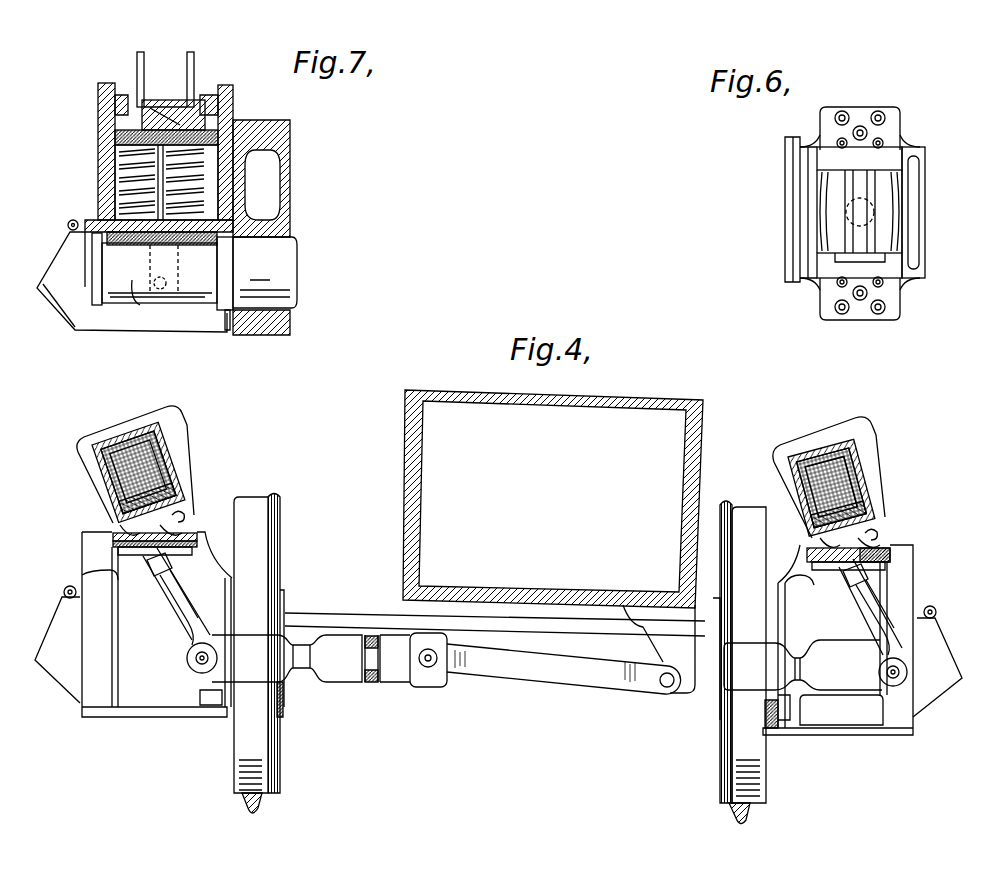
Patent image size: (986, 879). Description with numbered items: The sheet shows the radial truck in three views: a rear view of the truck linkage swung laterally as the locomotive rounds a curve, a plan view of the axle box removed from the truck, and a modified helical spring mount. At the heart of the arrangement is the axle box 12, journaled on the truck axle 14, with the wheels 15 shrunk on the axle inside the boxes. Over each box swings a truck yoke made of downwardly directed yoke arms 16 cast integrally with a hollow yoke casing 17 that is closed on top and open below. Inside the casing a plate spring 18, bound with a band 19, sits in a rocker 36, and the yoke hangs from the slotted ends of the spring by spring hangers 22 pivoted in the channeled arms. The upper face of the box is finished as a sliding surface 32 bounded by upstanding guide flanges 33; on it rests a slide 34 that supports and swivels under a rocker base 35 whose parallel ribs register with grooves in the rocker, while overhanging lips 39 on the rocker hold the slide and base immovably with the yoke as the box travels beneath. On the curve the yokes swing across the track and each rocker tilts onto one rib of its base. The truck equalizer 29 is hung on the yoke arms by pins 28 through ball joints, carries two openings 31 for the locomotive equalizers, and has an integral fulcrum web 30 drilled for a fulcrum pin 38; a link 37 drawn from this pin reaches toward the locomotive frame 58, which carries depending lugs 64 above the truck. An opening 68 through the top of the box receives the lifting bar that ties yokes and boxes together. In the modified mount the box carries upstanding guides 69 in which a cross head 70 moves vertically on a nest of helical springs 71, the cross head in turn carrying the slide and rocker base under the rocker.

In FIG. 7, the axle box 12 is at (172, 330).
In FIG. 6, the axle box 12 is at (888, 112).
In FIG. 4, the axle box 12 is at (918, 586).
In FIG. 7, the truck axle 14 is at (285, 272).
In FIG. 4, the truck axle 14 is at (372, 618).
In FIG. 7, the wheels 15 is at (275, 180).
In FIG. 4, the wheels 15 is at (282, 752).
In FIG. 7, the yoke arms 16 is at (194, 60).
In FIG. 4, the yoke arms 16 is at (195, 628).
In FIG. 4, the yoke casing 17 is at (125, 430).
In FIG. 4, the plate spring 18 is at (815, 455).
In FIG. 4, the band 19 is at (162, 492).
In FIG. 4, the spring hanger 22 is at (175, 580).
In FIG. 4, the pins 28 is at (198, 662).
In FIG. 4, the truck equalizer 29 is at (345, 678).
In FIG. 4, the fulcrum web 30 is at (420, 683).
In FIG. 4, the openings 31 is at (300, 645).
In FIG. 6, the sliding surface 32 is at (895, 155).
In FIG. 6, the guide flanges 33 is at (810, 185).
In FIG. 4, the guide flanges 33 is at (107, 533).
In FIG. 7, the slide 34 is at (218, 140).
In FIG. 6, the slide 34 is at (860, 264).
In FIG. 4, the slide 34 is at (122, 548).
In FIG. 7, the rocker base 35 is at (152, 104).
In FIG. 6, the rocker base 35 is at (845, 200).
In FIG. 4, the rocker base 35 is at (885, 548).
In FIG. 7, the rocker 36 is at (150, 100).
In FIG. 4, the rocker 36 is at (186, 499).
In FIG. 4, the link 37 is at (562, 680).
In FIG. 4, the fulcrum pin 38 is at (435, 667).
In FIG. 4, the overhanging lips 39 is at (184, 516).
In FIG. 4, the locomotive frame 58 is at (412, 552).
In FIG. 4, the lugs 64 is at (648, 615).
In FIG. 4, the opening 68 is at (118, 578).
In FIG. 7, the upstanding guides 69 is at (220, 100).
In FIG. 7, the cross head 70 is at (100, 125).
In FIG. 7, the helical springs 71 is at (100, 170).